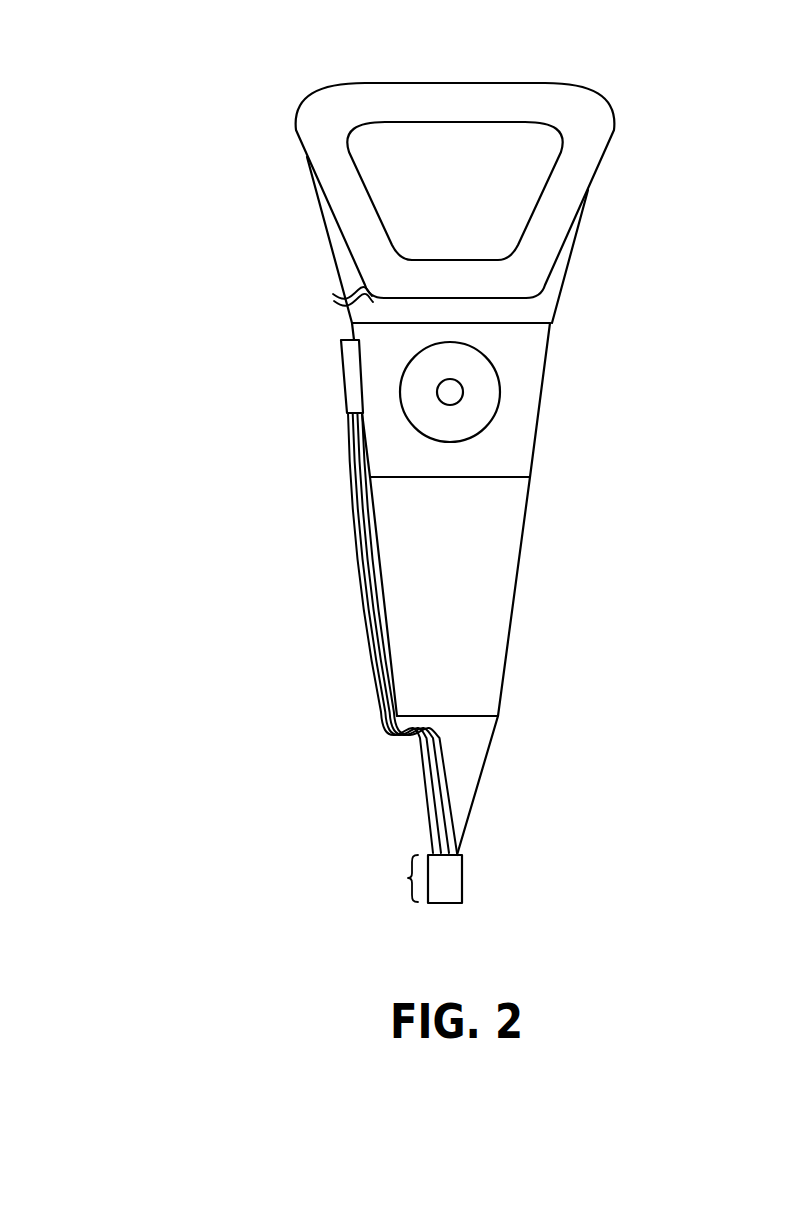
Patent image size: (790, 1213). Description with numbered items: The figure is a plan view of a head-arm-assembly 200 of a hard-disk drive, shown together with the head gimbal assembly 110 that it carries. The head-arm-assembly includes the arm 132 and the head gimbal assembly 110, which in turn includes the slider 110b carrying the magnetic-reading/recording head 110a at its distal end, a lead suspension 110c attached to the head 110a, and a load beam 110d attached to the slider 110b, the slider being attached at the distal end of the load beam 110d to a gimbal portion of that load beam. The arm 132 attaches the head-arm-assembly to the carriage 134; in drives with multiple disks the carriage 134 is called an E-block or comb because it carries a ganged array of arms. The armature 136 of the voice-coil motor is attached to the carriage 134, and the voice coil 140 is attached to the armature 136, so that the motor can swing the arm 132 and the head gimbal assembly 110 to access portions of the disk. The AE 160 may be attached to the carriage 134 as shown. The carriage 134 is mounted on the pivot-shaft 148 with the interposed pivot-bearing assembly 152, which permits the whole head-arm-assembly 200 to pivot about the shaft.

The handheld device 200 is at (114, 63).
The voice coil 140 is at (352, 213).
The armature 136 is at (352, 276).
The AE 160 is at (352, 378).
The pivot-shaft 148 is at (450, 392).
The pivot-bearing assembly 152 is at (483, 402).
The carriage 134 is at (505, 443).
The arm 132 is at (445, 555).
The head gimbal assembly 110 is at (255, 675).
The magnetic-reading/recording head 110a is at (436, 892).
The slider 110b is at (408, 878).
The lead suspension 110c is at (422, 789).
The load beam 110d is at (445, 753).